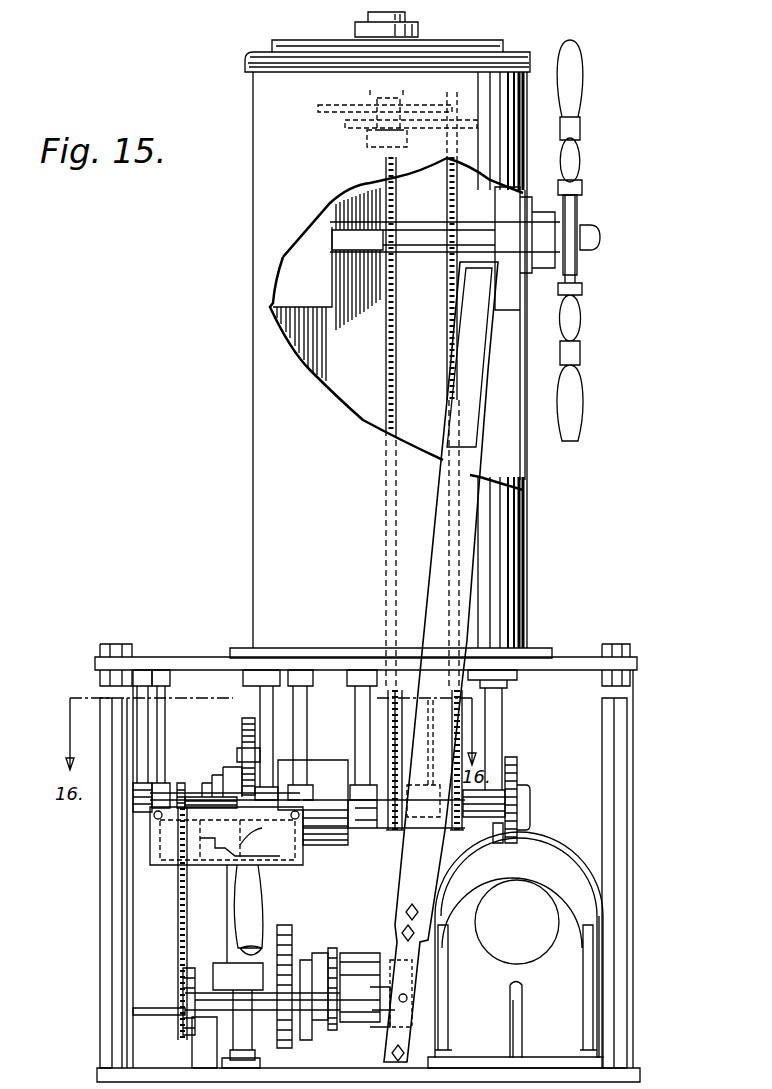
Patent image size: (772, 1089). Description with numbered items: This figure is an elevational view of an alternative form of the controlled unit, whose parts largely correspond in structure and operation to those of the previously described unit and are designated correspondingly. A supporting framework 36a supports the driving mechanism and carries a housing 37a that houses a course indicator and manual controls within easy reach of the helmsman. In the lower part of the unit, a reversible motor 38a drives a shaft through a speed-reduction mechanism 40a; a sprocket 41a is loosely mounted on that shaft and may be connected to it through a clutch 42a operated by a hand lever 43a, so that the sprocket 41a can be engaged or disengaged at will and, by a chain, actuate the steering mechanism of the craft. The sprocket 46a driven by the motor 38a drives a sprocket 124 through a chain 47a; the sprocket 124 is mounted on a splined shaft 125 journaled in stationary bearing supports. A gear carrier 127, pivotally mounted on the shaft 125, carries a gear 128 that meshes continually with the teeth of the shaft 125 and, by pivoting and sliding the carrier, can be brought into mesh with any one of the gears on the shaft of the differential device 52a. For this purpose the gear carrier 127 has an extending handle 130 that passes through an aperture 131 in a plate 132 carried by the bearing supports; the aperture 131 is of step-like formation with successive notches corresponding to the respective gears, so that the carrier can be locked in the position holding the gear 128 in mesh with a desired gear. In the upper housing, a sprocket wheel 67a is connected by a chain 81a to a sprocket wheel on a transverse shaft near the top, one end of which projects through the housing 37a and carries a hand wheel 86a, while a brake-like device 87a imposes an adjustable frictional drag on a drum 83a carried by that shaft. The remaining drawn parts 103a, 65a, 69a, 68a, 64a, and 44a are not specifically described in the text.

The housing 37a is at (252, 243).
The drum 83a is at (362, 232).
The brake-like device 87a is at (302, 304).
The hand wheel 86a is at (570, 90).
The chain 103a is at (447, 302).
The chain 81a is at (425, 394).
The hand lever 43a is at (470, 462).
The supporting framework 36a is at (630, 796).
The reversible motor 38a is at (560, 878).
The speed-reduction mechanism 40a is at (520, 943).
The clutch 42a is at (378, 958).
The hanger rod 65a is at (495, 726).
The gear 69a is at (519, 778).
The sprocket 68a is at (455, 832).
The sprocket wheel 67a is at (395, 833).
The link 64a is at (431, 758).
The differential device 52a is at (325, 768).
The gear 128 is at (243, 728).
The sprocket 124 is at (178, 783).
The splined shaft 125 is at (205, 790).
The aperture 131 is at (240, 837).
The plate 132 is at (295, 858).
The gear carrier 127 is at (262, 914).
The handle 130 is at (245, 900).
The chain 47a is at (178, 920).
The sprocket 46a is at (183, 995).
The gear 44a is at (286, 925).
The sprocket 41a is at (332, 948).